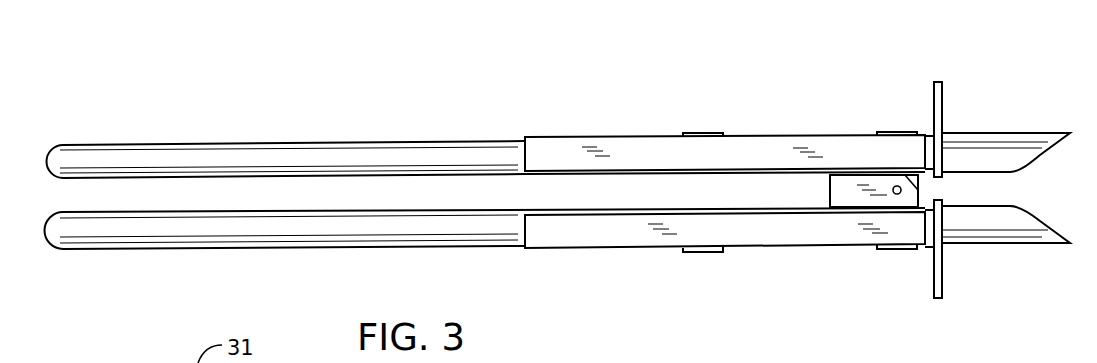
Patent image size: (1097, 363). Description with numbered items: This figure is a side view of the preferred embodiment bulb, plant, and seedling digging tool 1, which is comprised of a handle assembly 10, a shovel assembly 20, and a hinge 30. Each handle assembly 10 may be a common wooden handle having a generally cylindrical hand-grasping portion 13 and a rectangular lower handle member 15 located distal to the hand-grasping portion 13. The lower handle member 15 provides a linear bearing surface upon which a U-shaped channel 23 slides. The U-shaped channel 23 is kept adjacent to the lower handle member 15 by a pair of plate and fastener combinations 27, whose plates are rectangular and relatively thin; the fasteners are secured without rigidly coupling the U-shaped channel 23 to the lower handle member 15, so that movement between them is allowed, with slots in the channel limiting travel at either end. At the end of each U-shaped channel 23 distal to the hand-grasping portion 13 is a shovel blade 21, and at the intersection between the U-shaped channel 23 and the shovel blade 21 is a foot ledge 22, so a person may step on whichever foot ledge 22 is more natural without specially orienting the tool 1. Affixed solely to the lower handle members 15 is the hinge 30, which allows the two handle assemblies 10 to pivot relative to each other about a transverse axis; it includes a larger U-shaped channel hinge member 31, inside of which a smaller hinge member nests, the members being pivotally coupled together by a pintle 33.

The bulb, plant, and seedling digging tool 1 is at (351, 62).
The handle assembly 10 is at (162, 256).
The hand-grasping portion 13 is at (252, 235).
The lower handle member 15 is at (642, 173).
The shovel assembly 20 is at (659, 125).
The shovel blade 21 is at (1000, 150).
The foot ledge 22 is at (942, 108).
The U-shaped channel 23 is at (547, 158).
The plate and fastener combination 27 is at (896, 249).
The hinge 30 is at (822, 187).
The larger U-shaped channel hinge member 31 is at (843, 188).
The pintle 33 is at (894, 187).